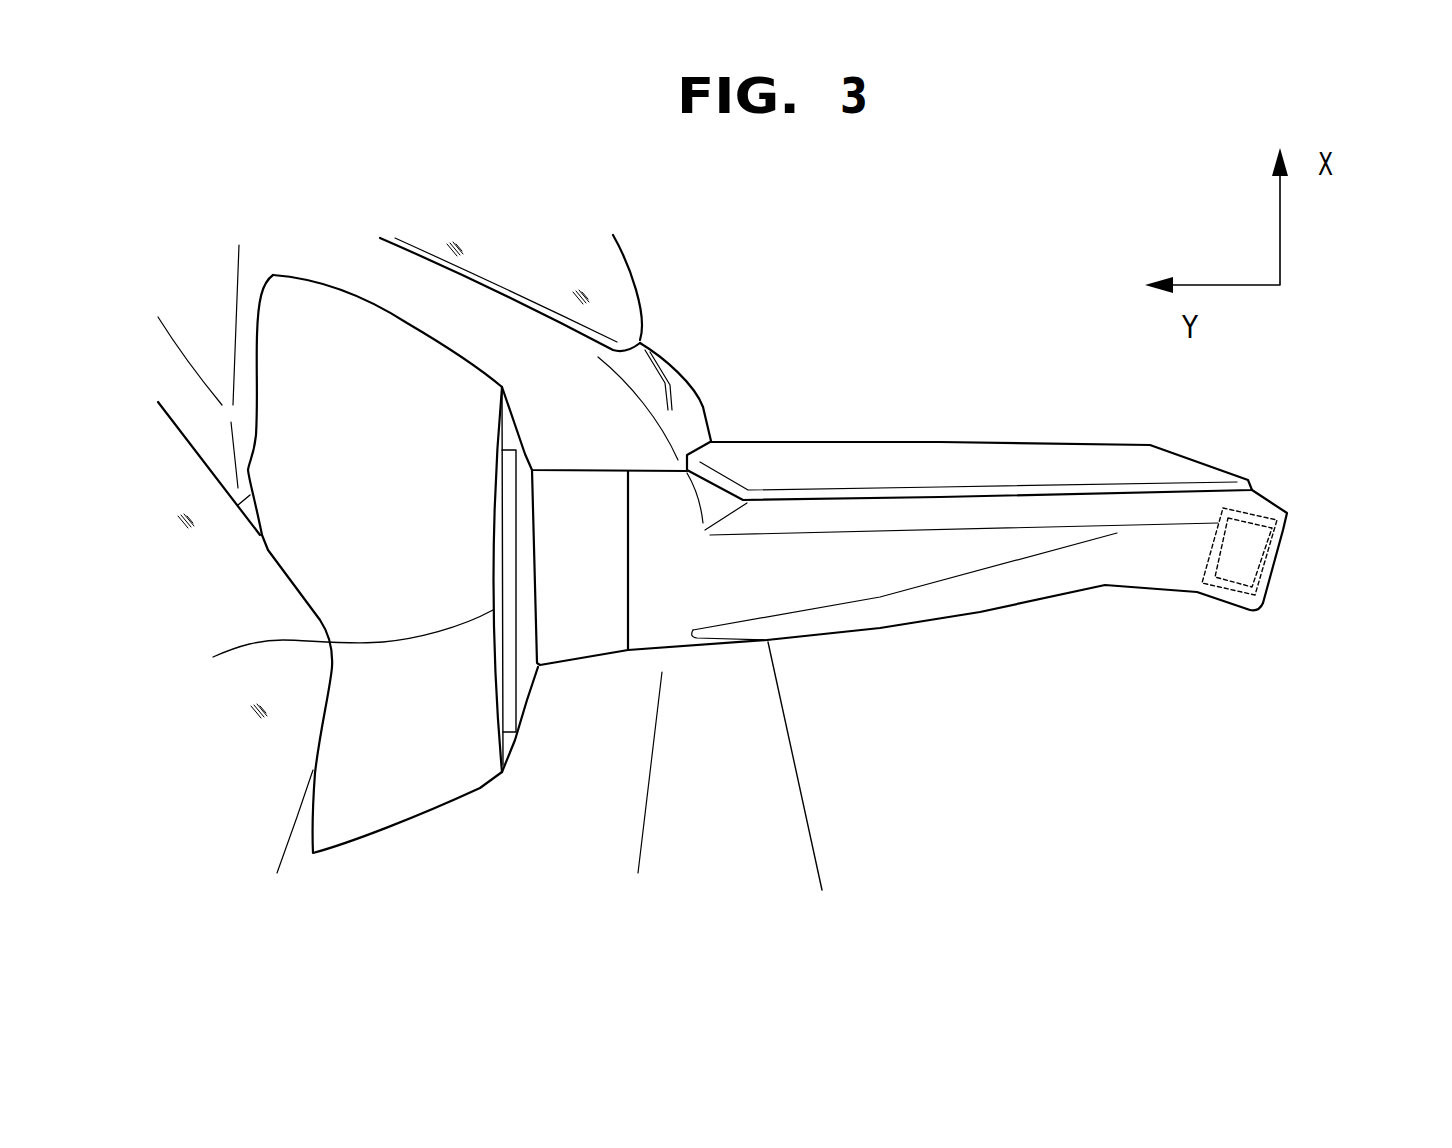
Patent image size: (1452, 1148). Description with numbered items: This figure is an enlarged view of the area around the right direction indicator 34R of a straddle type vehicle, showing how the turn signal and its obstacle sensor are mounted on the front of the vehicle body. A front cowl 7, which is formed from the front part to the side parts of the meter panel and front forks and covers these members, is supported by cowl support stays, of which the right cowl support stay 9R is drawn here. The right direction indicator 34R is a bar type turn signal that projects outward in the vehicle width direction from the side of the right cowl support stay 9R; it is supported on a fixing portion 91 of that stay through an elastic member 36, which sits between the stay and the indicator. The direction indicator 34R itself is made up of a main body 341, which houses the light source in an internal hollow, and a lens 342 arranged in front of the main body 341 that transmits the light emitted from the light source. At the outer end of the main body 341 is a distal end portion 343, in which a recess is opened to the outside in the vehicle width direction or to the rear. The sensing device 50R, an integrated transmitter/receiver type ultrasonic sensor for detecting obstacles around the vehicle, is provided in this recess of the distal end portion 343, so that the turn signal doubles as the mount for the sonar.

The front cowl 7 is at (810, 837).
The right cowl support stay 9R is at (432, 803).
The fixing portion 91 is at (334, 649).
The elastic member 36 is at (568, 652).
The right direction indicator 34R is at (1034, 653).
The main body 341 is at (1105, 585).
The lens 342 is at (877, 440).
The distal end portion 343 is at (1287, 513).
The sensing device 50R is at (1248, 560).